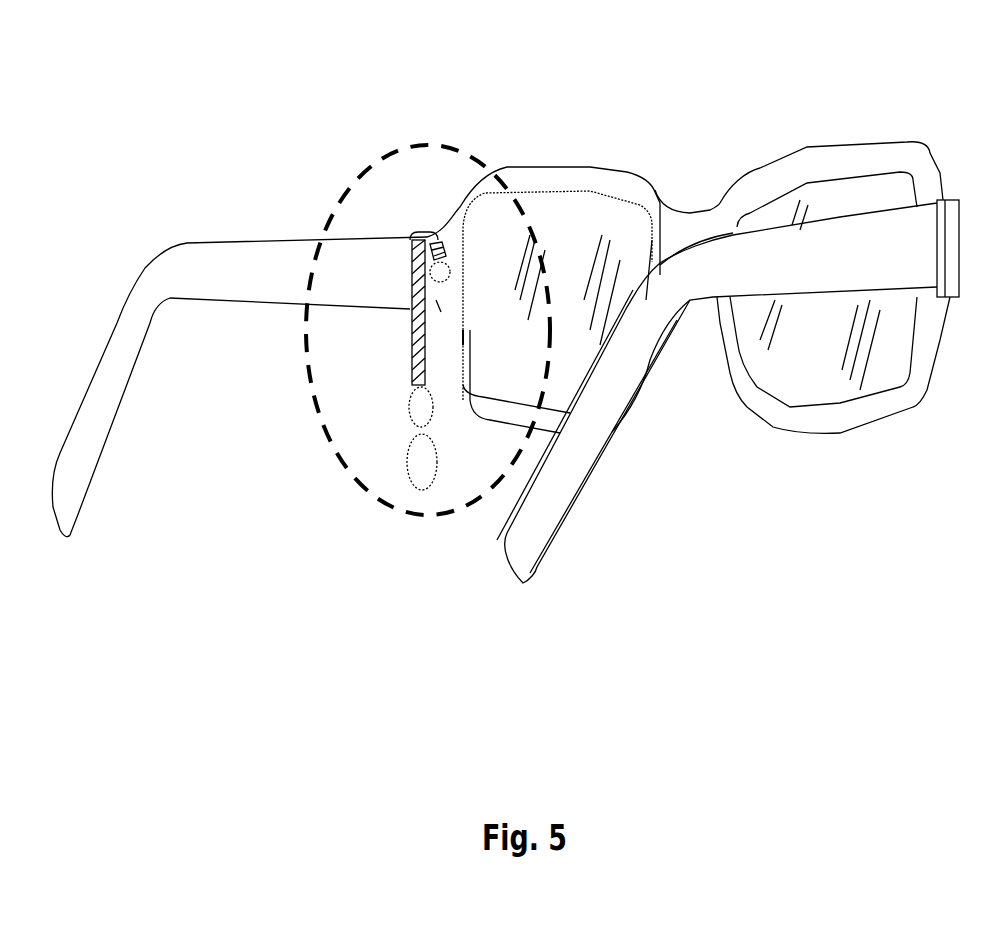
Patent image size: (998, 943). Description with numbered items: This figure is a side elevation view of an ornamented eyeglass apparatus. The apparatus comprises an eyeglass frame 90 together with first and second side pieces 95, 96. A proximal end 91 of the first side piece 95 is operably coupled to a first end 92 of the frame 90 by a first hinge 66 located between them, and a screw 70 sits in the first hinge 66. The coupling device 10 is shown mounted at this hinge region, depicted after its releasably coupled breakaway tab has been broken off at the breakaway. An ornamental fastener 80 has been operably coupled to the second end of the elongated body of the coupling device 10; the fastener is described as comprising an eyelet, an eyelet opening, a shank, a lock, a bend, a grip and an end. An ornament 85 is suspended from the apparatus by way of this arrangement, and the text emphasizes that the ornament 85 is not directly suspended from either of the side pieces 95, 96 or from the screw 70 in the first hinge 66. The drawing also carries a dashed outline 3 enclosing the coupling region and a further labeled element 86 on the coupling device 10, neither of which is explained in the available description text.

The detail region of device mounted on eyeglasses 3 is at (315, 430).
The coupling device 10 is at (437, 328).
The first hinge 66 is at (440, 273).
The screw 70 is at (452, 250).
The ornamental fastener 80 is at (403, 266).
The ornament 85 is at (403, 452).
The support arm 86 is at (418, 374).
The eyeglass frame 90 is at (534, 140).
The proximal end 91 is at (438, 305).
The first end 92 is at (468, 337).
The first side piece 95 is at (268, 293).
The second side piece 96 is at (800, 280).